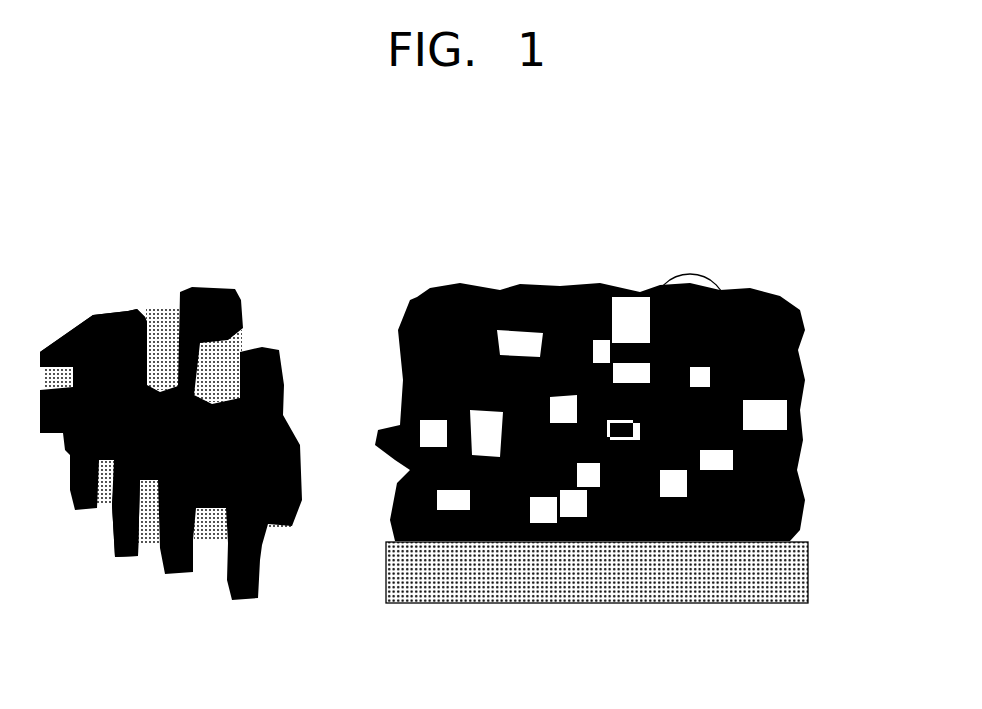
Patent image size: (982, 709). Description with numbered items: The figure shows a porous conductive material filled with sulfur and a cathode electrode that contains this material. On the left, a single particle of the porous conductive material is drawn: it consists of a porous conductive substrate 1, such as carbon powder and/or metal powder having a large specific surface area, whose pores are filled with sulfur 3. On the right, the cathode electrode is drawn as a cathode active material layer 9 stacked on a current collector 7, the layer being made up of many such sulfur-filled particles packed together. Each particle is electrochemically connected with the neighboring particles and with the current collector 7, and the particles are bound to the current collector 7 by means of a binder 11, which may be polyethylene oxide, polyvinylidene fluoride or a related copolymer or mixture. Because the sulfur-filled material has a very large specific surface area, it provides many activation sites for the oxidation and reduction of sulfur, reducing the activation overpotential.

The porous conductive substrate 1 is at (217, 290).
The sulfur 3 is at (153, 538).
The current collector 7 is at (810, 576).
The cathode active material layer 9 is at (846, 275).
The binder 11 is at (645, 332).